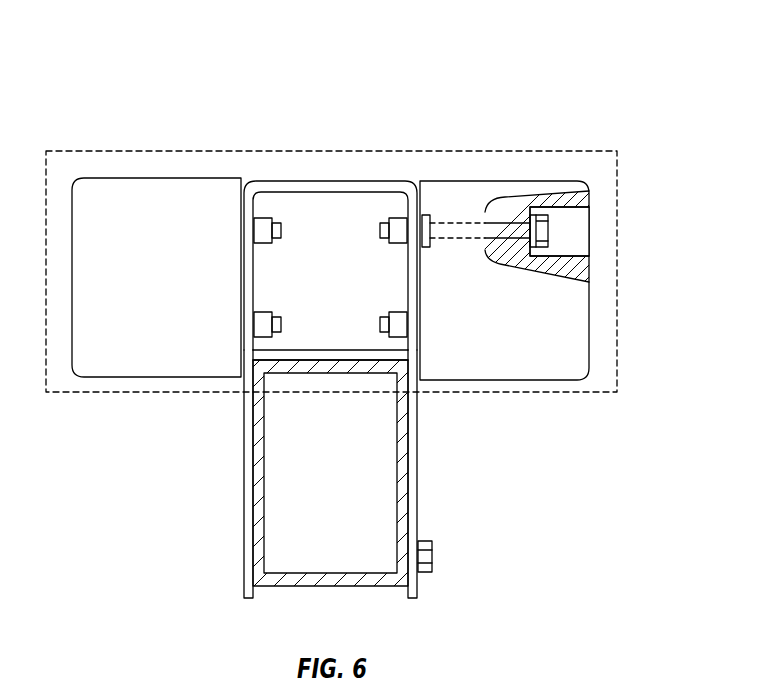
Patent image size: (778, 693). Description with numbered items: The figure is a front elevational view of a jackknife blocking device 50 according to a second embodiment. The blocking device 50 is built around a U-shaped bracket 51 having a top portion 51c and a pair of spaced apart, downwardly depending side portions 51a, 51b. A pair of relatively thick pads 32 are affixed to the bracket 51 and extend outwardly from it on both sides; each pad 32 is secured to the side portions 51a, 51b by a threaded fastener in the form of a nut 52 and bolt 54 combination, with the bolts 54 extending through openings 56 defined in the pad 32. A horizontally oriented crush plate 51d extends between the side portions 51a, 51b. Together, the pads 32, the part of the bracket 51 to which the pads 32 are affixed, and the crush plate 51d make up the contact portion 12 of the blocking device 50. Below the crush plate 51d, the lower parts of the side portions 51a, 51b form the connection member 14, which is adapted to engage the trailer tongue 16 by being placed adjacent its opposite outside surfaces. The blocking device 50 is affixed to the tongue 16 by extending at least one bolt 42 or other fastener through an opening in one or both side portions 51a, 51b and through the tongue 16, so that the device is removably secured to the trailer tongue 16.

The blocking device 50 is at (502, 78).
The contact portion 12 is at (137, 148).
The pads 32 is at (153, 368).
The openings 56 is at (572, 232).
The bolt 54 is at (541, 232).
The top portion 51c is at (328, 189).
The nut 52 is at (262, 327).
The crush plate 51d is at (355, 337).
The tongue 16 is at (310, 578).
The U-shaped bracket 51 is at (250, 445).
The side portion 51a is at (250, 543).
The side portion 51b is at (410, 520).
The bolt 42 is at (425, 557).
The connection member 14 is at (460, 462).